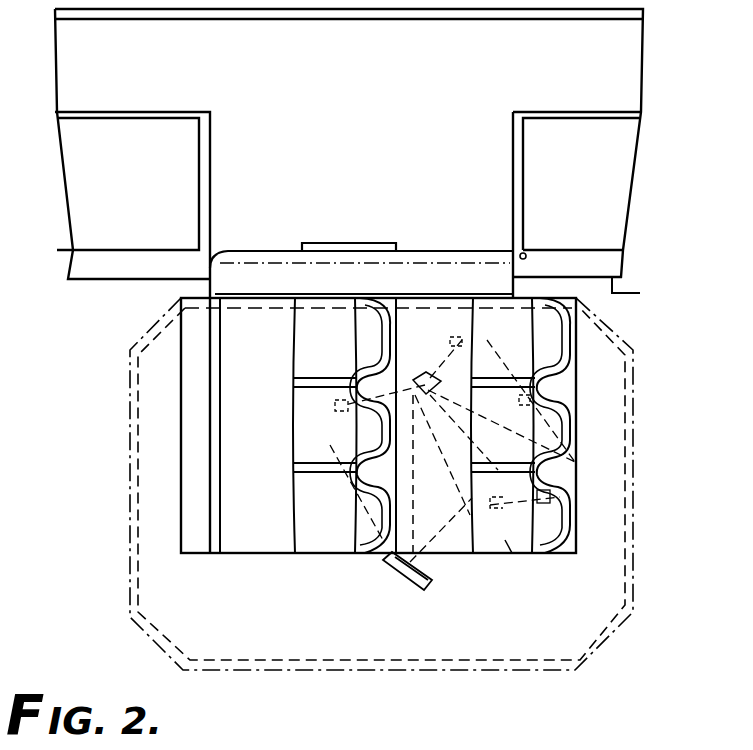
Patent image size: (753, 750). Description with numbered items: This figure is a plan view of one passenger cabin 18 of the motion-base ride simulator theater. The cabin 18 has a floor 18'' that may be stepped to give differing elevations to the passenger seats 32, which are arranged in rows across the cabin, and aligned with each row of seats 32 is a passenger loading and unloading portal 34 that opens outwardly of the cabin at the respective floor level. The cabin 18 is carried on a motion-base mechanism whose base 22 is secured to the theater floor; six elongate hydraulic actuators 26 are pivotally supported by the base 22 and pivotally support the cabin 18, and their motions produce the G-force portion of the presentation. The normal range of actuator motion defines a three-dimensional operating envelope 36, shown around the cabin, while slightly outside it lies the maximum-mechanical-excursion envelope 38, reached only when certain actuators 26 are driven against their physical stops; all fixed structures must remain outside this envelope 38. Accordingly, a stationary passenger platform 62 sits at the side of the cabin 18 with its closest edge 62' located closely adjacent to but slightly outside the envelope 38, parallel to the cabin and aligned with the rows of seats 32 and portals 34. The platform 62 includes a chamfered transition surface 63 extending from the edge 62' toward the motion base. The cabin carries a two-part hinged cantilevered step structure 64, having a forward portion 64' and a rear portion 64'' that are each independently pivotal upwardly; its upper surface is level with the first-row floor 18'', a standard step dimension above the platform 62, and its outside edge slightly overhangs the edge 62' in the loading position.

The stationary passenger platform 62 is at (349, 281).
The closest edge of the platform 62' is at (558, 239).
The chamfered transition surface 63 is at (642, 292).
The two-part hinged cantilevered step structure 64 is at (361, 248).
The forward portion of the step structure 64' is at (292, 233).
The rear portion of the step structure 64'' is at (437, 233).
The passenger cabin 18 is at (378, 455).
The floor of the cabin 18'' is at (353, 483).
The passenger loading and unloading portal 34 is at (257, 304).
The passenger seats 32 is at (293, 450).
The elongate actuators 26 is at (334, 405).
The base 22 is at (513, 557).
The operating envelope 36 is at (628, 477).
The maximum-mechanical-excursion envelope 38 is at (634, 541).